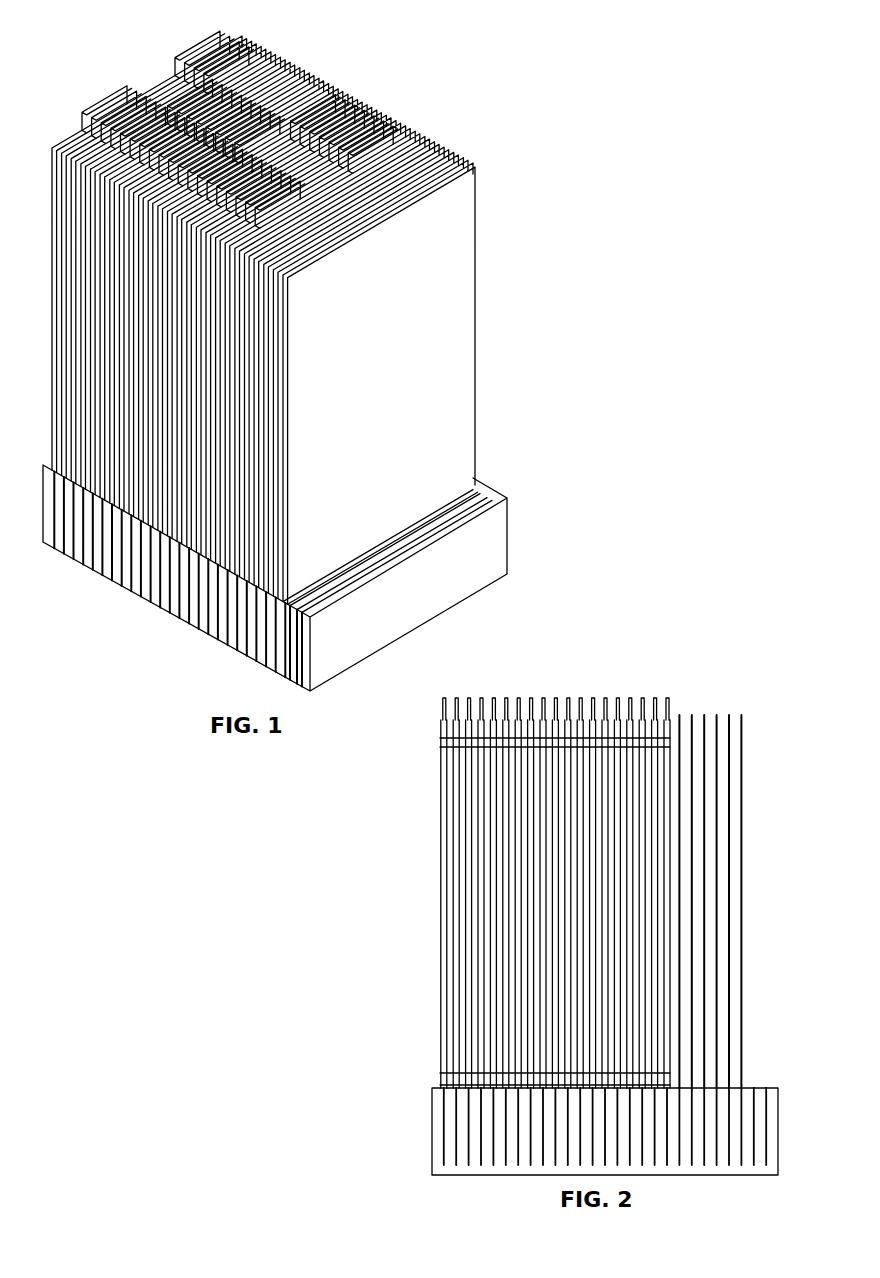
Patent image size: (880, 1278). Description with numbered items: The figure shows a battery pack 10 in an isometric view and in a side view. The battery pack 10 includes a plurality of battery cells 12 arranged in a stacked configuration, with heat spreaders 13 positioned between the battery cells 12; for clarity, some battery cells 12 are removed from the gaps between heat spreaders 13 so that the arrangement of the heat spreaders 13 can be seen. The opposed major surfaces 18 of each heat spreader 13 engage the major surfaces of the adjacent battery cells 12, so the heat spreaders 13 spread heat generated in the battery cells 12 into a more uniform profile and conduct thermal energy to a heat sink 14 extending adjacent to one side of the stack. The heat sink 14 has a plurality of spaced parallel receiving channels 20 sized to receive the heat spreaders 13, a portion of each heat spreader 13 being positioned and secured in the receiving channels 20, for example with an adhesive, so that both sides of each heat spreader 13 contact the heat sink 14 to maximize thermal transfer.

In FIG. 1, the battery pack 10 is at (472, 109).
In FIG. 2, the battery pack 10 is at (405, 992).
In FIG. 1, the battery cell 12 is at (236, 301).
In FIG. 2, the battery cell 12 is at (468, 832).
In FIG. 1, the heat spreader 13 is at (445, 346).
In FIG. 2, the heat spreader 13 is at (465, 900).
In FIG. 1, the heat sink 14 is at (503, 537).
In FIG. 2, the heat sink 14 is at (605, 1131).
In FIG. 1, the opposed major surfaces 18 is at (377, 418).
In FIG. 2, the opposed major surfaces 18 is at (697, 740).
In FIG. 1, the receiving channel 20 is at (175, 596).
In FIG. 2, the receiving channel 20 is at (490, 1160).